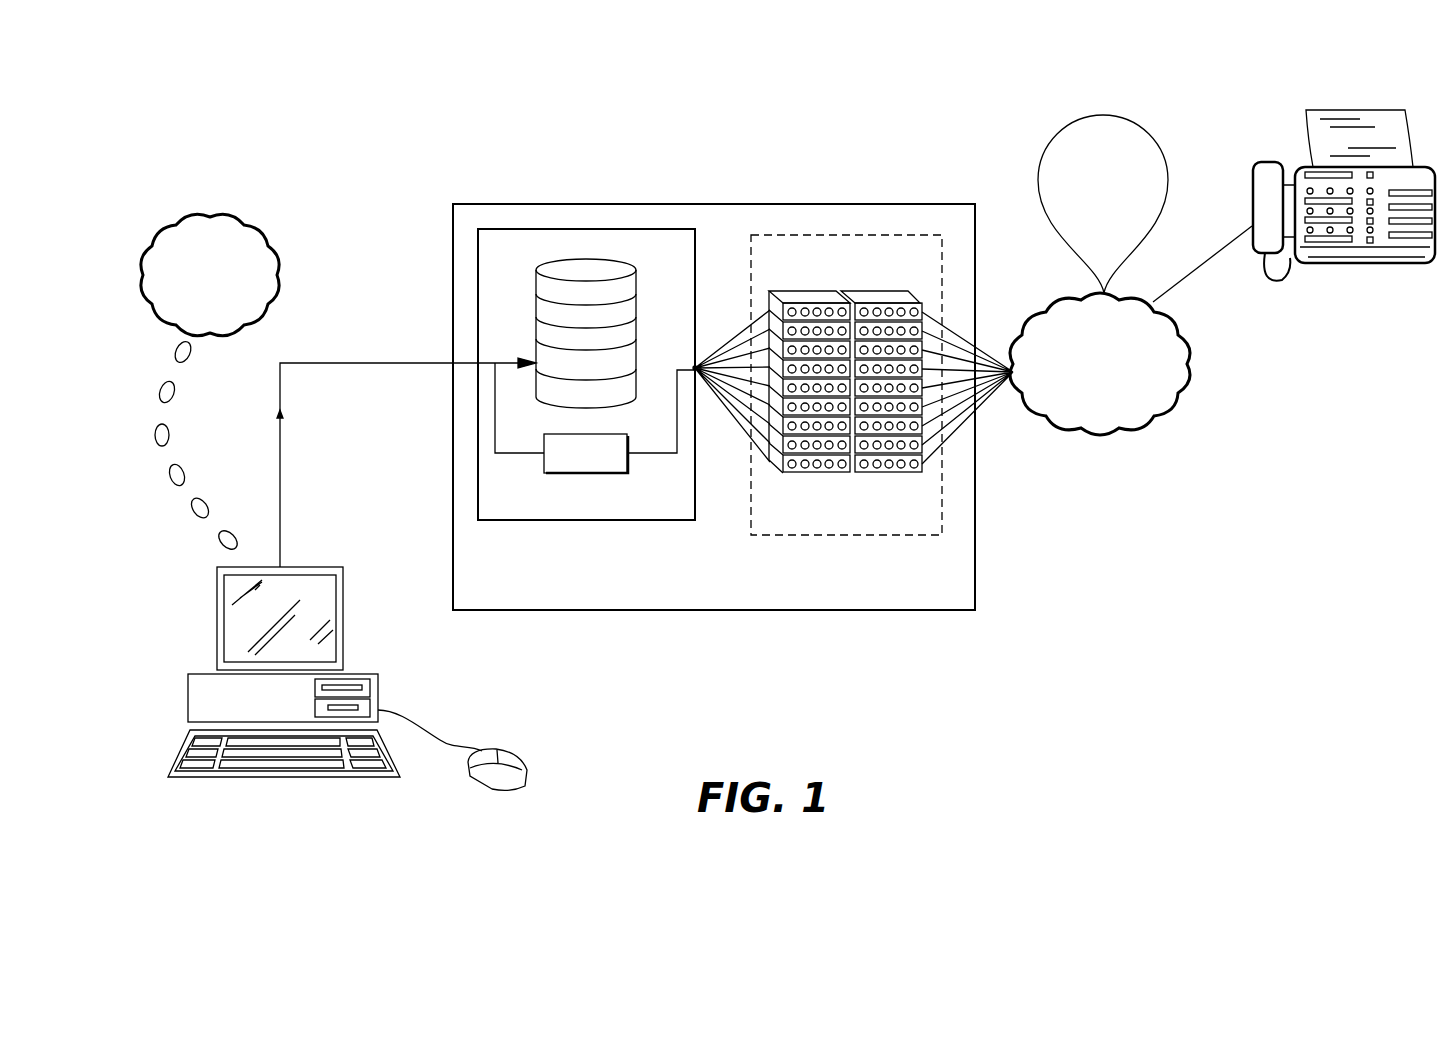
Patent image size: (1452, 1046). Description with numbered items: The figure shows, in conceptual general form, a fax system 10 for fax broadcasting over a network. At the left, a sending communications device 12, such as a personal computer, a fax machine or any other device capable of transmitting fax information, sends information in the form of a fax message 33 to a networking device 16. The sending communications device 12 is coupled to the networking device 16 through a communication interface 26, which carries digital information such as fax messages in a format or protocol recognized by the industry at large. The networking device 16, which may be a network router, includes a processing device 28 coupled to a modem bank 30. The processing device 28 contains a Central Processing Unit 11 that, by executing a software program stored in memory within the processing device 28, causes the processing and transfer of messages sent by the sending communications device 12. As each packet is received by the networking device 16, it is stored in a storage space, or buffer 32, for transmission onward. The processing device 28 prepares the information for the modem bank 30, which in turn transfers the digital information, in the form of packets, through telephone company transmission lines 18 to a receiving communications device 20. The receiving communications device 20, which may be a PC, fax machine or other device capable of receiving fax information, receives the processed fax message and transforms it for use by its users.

The fax system 10 is at (250, 178).
The Central Processing Unit 11 is at (602, 474).
The sending communications device 12 is at (217, 620).
The networking device 16 is at (927, 611).
The telephone company transmission lines 18 is at (1175, 405).
The receiving communications device 20 is at (1398, 264).
The communication interface 26 is at (378, 365).
The processing device 28 is at (664, 521).
The modem bank 30 is at (892, 536).
The buffer 32 is at (596, 400).
The fax message 33 is at (277, 248).